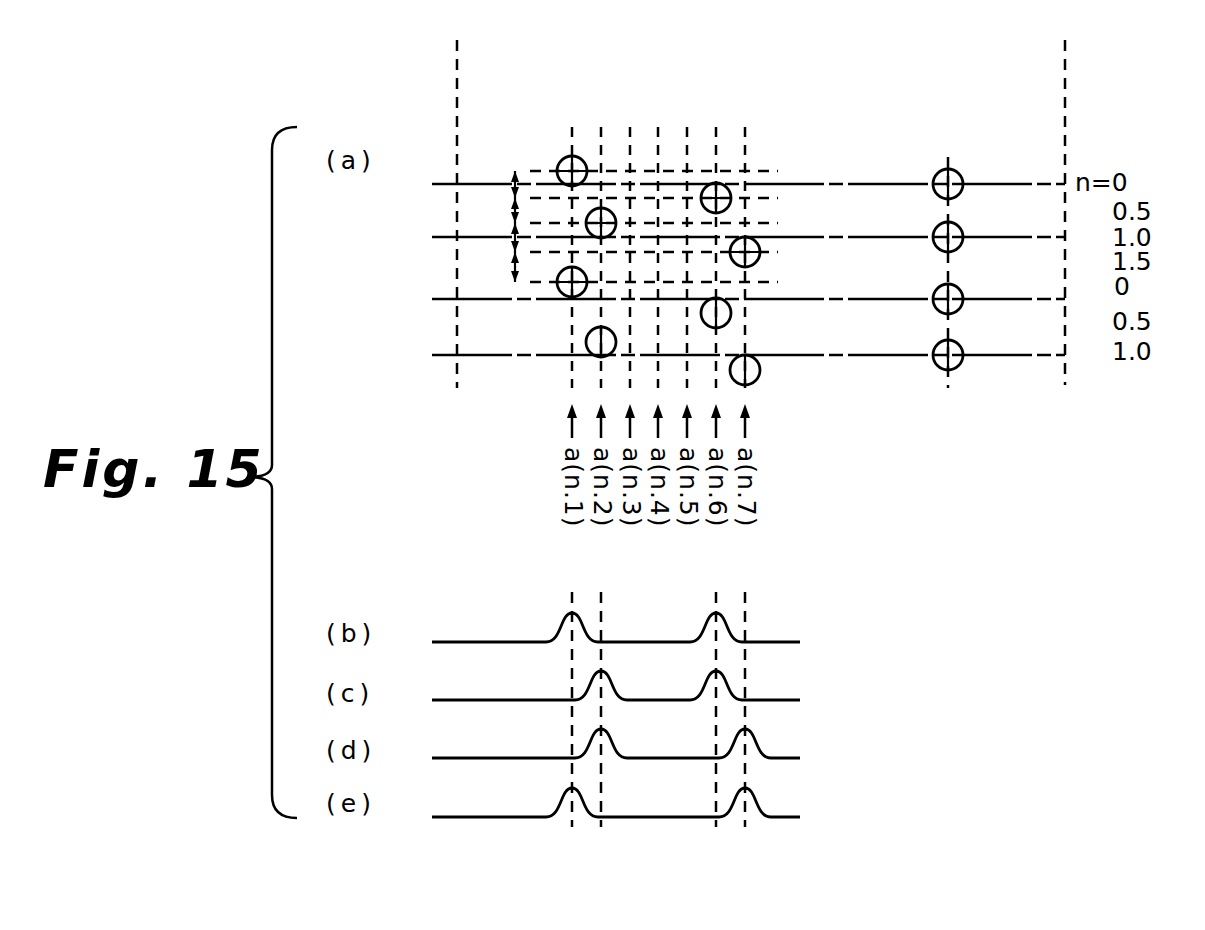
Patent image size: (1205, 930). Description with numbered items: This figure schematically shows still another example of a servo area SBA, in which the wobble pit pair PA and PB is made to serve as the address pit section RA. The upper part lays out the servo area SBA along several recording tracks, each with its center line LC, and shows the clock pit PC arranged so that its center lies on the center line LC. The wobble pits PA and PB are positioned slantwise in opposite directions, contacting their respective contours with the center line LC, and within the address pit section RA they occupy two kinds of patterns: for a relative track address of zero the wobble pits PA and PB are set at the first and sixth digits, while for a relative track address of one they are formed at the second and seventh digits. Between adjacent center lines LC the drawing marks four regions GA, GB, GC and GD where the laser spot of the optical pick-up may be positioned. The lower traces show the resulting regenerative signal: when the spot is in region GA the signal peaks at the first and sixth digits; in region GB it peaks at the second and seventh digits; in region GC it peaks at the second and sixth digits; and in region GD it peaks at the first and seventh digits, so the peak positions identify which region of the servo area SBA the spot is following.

The servo area SBA is at (1065, 49).
The address pit section RA is at (753, 121).
The clock pit PC is at (948, 144).
The center line LC is at (727, 270).
The region GA is at (488, 176).
The region GB is at (488, 214).
The region GC is at (487, 256).
The region GD is at (488, 278).
The wobble pit PA is at (615, 529).
The wobble pit PB is at (759, 529).